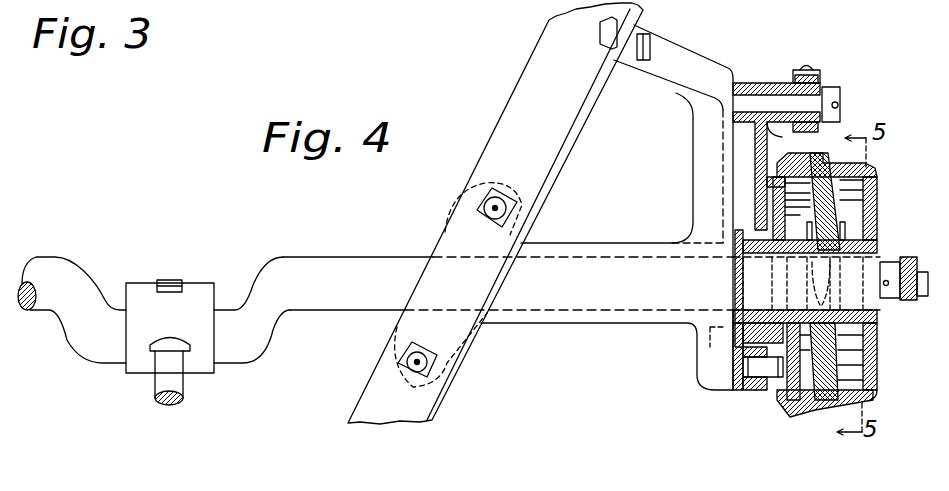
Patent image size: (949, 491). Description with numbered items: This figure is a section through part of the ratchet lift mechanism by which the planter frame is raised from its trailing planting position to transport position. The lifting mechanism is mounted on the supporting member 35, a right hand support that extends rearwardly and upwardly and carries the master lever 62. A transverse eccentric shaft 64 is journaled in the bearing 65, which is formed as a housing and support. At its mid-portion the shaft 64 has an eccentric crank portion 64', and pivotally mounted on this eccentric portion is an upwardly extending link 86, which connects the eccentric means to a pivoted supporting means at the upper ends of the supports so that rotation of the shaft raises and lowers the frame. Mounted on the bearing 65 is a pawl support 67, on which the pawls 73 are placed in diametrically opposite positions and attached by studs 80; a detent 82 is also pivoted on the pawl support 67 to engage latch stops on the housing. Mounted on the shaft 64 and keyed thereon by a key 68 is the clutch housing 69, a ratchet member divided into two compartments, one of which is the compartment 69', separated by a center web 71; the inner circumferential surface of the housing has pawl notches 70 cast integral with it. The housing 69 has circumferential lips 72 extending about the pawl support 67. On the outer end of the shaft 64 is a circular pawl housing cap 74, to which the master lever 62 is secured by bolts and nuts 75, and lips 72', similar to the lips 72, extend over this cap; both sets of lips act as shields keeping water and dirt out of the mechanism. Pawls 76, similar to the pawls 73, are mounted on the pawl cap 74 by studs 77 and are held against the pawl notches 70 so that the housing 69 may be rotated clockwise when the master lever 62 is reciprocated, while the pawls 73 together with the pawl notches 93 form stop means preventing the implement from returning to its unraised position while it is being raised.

The right hand supporting member 35 is at (540, 205).
The transverse eccentric shaft 64 is at (508, 301).
The eccentric crank portion 64' is at (158, 318).
The upwardly extending link 86 is at (178, 385).
The bearing 65 is at (604, 322).
The pawl support 67 is at (738, 85).
The detent 82 is at (800, 68).
The key 68 is at (733, 260).
The clutch housing 69 is at (842, 189).
The compartment 69' is at (853, 186).
The center web 71 is at (817, 168).
The pawls 73 is at (800, 212).
The studs 80 is at (800, 222).
The circular pawl housing cap 74 is at (880, 190).
The pawls 76 is at (857, 217).
The studs 77 is at (882, 230).
The master lever 62 is at (920, 317).
The bolts and nuts 75 is at (927, 330).
The pawl notches 70 is at (870, 376).
The circumferential lips 72 is at (755, 372).
The lips 72' is at (901, 412).
The pawl notches 93 is at (787, 405).